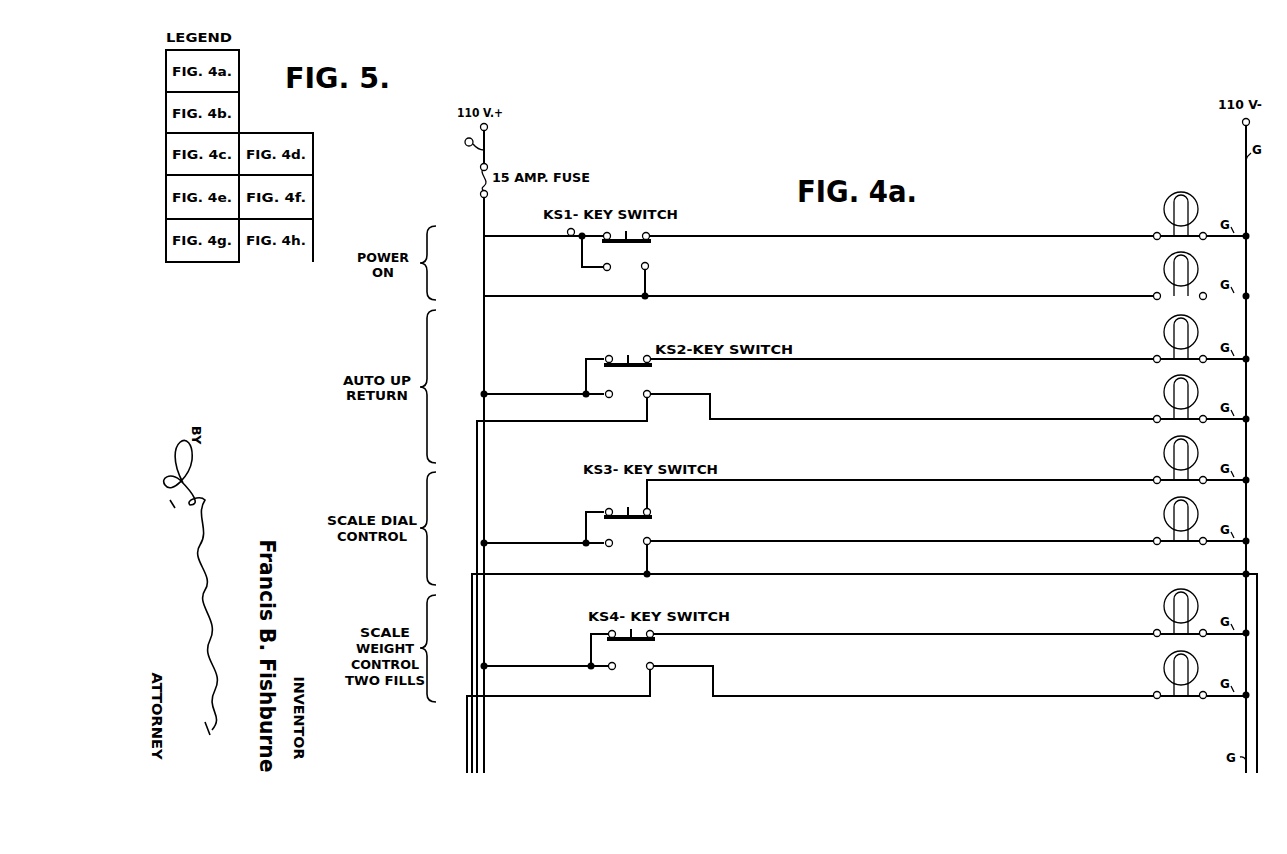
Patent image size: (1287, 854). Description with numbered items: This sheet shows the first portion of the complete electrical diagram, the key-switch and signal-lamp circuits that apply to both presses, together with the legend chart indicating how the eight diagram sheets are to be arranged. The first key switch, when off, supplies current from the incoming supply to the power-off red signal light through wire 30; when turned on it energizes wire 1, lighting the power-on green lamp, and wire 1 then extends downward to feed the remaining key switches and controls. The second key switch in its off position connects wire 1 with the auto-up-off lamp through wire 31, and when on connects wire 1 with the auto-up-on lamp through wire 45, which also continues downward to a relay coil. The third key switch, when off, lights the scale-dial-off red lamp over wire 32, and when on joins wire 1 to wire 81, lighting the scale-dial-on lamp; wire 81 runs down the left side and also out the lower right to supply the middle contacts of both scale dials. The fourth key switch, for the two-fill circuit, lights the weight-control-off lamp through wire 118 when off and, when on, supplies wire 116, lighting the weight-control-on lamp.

The wire 1 is at (484, 297).
The wire 30 is at (684, 235).
The wire 31 is at (688, 365).
The wire 32 is at (683, 486).
The wire 45 is at (693, 396).
The wire 81 is at (925, 573).
The wire 116 is at (651, 672).
The wire 118 is at (688, 638).